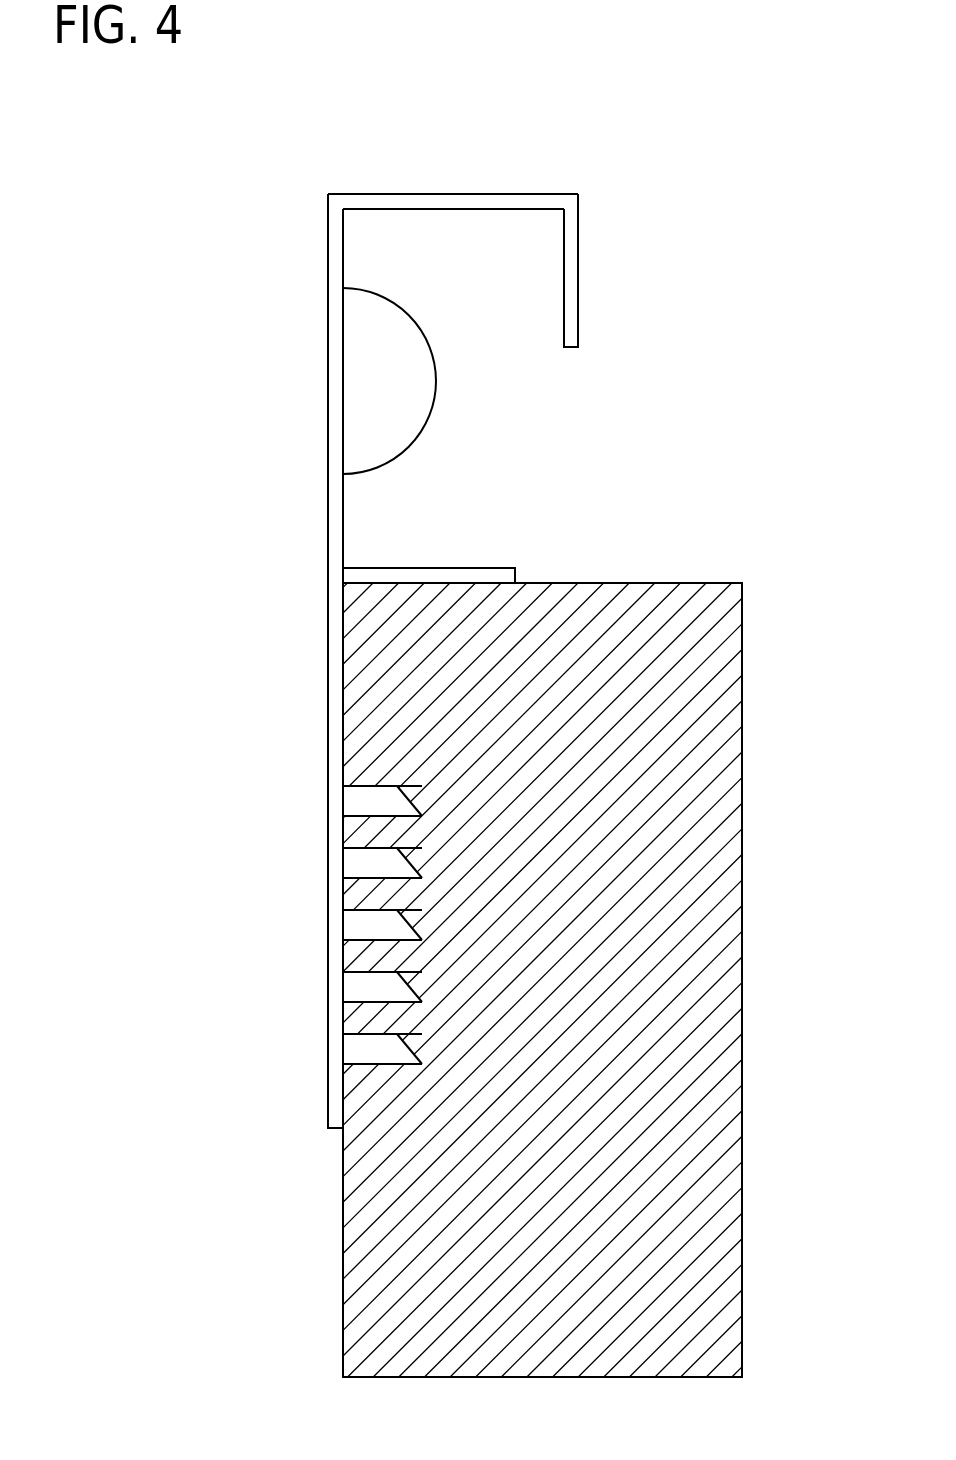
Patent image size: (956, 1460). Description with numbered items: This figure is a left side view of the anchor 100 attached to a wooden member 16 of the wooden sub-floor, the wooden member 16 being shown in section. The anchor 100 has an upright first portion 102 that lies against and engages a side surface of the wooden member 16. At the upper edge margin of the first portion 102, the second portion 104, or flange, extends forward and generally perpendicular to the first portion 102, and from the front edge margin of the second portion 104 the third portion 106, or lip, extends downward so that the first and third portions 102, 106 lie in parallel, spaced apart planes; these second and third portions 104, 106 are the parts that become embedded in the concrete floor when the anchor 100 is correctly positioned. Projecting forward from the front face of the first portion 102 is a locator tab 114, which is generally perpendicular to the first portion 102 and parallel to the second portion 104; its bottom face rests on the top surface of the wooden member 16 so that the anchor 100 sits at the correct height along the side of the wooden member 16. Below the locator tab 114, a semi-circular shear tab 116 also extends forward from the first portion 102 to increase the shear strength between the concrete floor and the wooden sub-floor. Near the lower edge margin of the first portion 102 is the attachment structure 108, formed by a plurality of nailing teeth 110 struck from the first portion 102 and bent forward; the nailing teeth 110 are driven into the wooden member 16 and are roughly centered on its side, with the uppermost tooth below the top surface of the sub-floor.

The anchor 100 is at (378, 611).
The first portion 102 is at (328, 363).
The second portion 104 is at (455, 194).
The third portion 106 is at (572, 347).
The attachment structure 108 is at (354, 951).
The nailing teeth 110 is at (373, 798).
The locator tab 114 is at (477, 568).
The shear tab 116 is at (418, 437).
The wooden member 16 is at (742, 690).